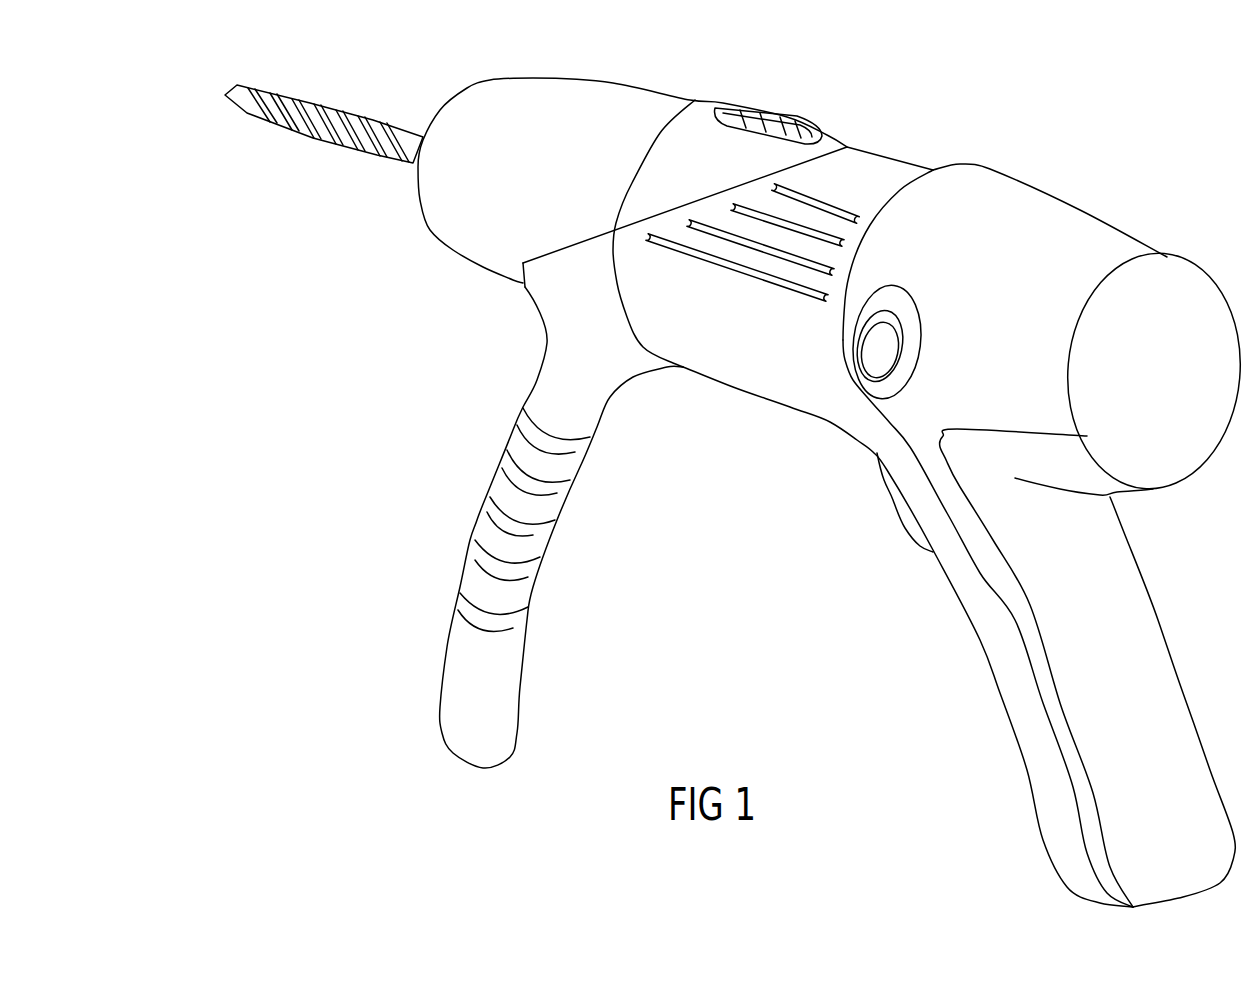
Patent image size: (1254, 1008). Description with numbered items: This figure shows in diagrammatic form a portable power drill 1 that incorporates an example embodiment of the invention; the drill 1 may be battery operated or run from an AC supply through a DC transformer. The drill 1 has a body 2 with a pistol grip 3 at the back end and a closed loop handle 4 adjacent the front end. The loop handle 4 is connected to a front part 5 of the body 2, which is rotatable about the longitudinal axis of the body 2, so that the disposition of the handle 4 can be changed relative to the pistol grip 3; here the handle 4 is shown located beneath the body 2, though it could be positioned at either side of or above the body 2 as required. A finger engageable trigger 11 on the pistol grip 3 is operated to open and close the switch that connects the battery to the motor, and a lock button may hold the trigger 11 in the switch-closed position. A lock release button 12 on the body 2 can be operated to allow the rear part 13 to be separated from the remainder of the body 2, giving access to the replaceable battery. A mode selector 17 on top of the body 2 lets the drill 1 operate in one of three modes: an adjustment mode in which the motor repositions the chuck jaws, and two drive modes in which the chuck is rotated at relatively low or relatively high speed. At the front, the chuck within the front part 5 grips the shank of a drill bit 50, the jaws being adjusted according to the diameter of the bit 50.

The drill 1 is at (905, 131).
The body 2 is at (870, 170).
The pistol grip 3 is at (1023, 712).
The loop handle 4 is at (470, 479).
The front part 5 is at (508, 112).
The trigger 11 is at (905, 517).
The lock release button 12 is at (880, 350).
The rear part 13 is at (1057, 233).
The mode selector 17 is at (797, 121).
The drill bit 50 is at (360, 134).